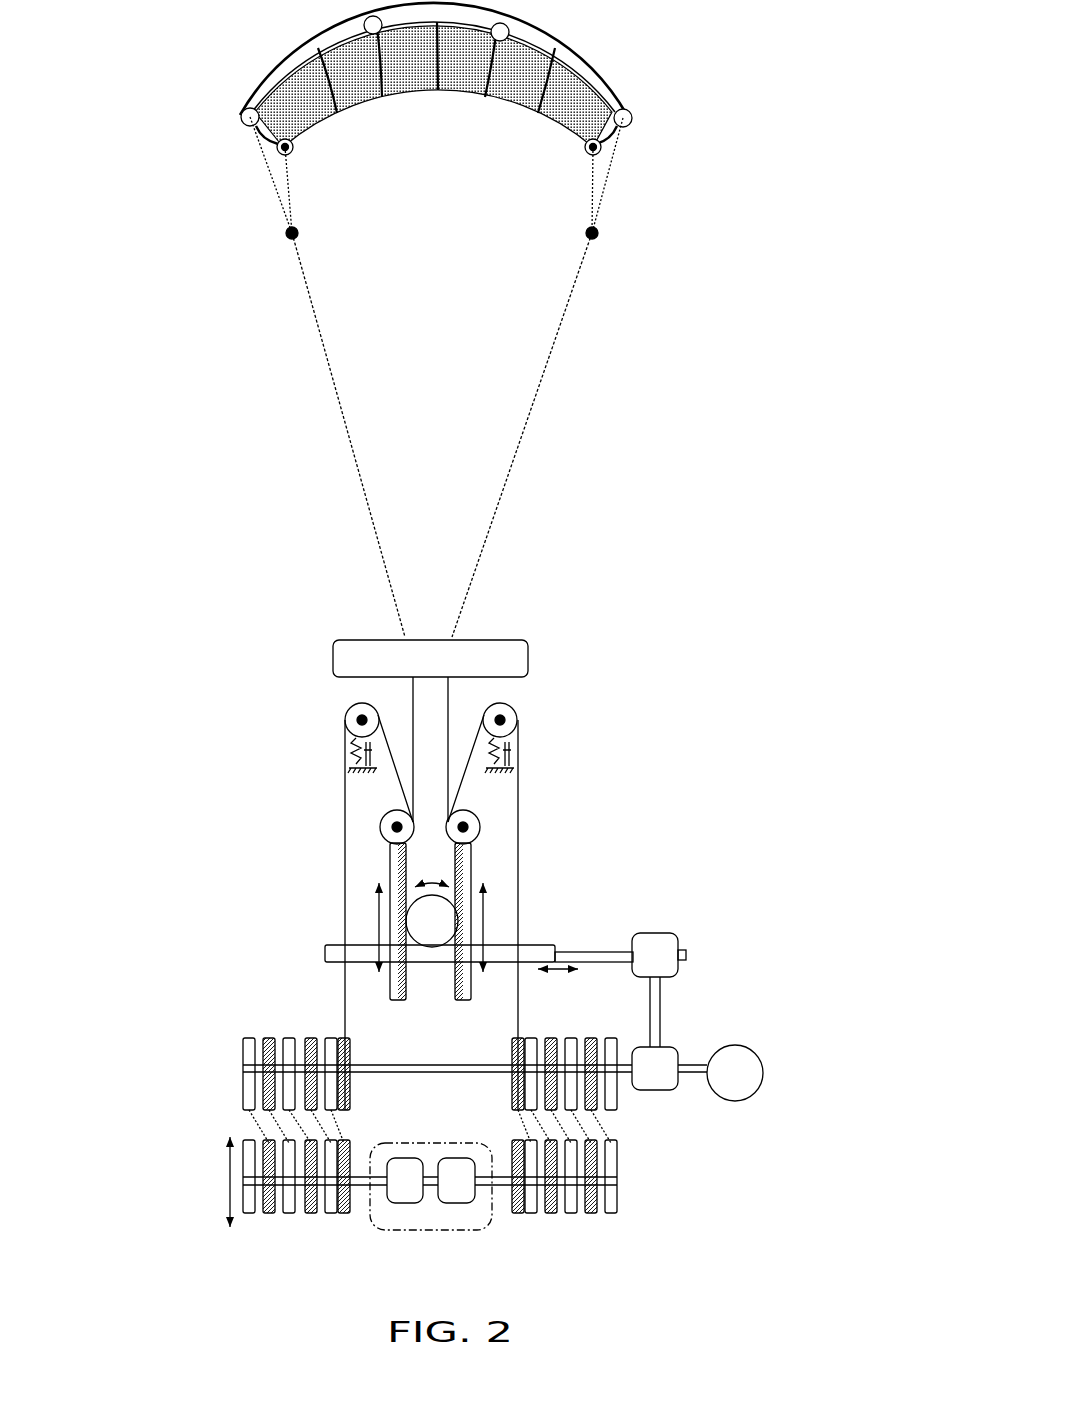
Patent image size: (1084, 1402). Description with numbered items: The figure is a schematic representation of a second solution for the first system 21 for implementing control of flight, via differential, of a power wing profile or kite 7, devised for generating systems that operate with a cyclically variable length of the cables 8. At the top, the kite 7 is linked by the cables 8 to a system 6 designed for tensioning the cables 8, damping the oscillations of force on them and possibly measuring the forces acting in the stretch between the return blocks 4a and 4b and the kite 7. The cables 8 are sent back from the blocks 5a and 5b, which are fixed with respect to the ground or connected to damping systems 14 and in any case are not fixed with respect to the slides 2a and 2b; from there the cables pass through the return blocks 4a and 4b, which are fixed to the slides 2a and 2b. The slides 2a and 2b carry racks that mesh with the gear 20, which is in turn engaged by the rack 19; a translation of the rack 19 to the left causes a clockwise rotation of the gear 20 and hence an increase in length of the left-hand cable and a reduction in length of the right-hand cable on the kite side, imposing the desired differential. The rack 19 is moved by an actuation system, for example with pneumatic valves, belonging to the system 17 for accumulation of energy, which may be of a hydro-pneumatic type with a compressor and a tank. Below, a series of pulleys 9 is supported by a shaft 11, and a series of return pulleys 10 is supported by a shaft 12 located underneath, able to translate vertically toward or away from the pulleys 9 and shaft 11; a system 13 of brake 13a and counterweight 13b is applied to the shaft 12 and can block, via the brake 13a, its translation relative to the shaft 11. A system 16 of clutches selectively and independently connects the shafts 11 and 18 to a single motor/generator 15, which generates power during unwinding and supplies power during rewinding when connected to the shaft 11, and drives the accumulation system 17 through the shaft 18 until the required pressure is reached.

The kite 7 is at (655, 158).
The cables 8 is at (367, 472).
The system for tensioning the cables 6 is at (385, 665).
The block 5a is at (347, 713).
The block 5b is at (512, 722).
The damping systems 14 is at (347, 748).
The return block 4a is at (387, 825).
The return block 4b is at (478, 817).
The slide 2a is at (387, 987).
The slide 2b is at (477, 863).
The gear 20 is at (410, 927).
The rack 19 is at (322, 945).
The first system for implementing control of flight 21 is at (760, 1055).
The system for accumulation of energy 17 is at (688, 978).
The shaft 18 is at (662, 1013).
The system of clutches 16 is at (650, 1102).
The motor/generator 15 is at (773, 1063).
The pulleys 9 is at (220, 1080).
The return pulleys 10 is at (300, 1232).
The shaft 11 is at (397, 1053).
The shaft 12 is at (362, 1198).
The system of brake and counterweight 13 is at (483, 1189).
The brake 13a is at (415, 1213).
The counterweight 13b is at (470, 1213).